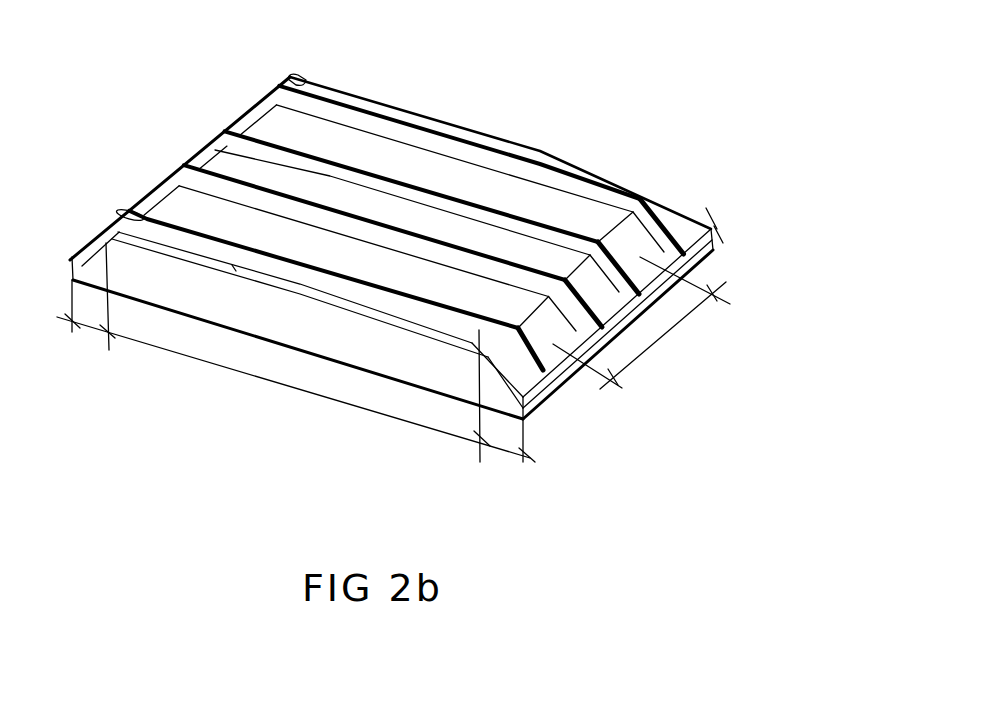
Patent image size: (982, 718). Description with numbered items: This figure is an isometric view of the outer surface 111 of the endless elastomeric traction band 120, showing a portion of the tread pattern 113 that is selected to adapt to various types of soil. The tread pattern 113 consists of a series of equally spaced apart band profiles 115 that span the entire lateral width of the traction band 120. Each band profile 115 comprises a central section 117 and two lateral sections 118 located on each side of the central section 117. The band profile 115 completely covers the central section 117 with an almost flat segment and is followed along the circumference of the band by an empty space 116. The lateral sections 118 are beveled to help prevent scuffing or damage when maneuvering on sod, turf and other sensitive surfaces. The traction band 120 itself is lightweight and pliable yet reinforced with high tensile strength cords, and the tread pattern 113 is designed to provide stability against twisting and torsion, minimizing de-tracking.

The outer surface 111 is at (428, 166).
The tread pattern 113 is at (673, 333).
The band profile 115 is at (238, 111).
The empty space 116 is at (523, 280).
The central section 117 is at (244, 376).
The lateral section 118 is at (88, 333).
The endless elastomeric traction band 120 is at (722, 214).